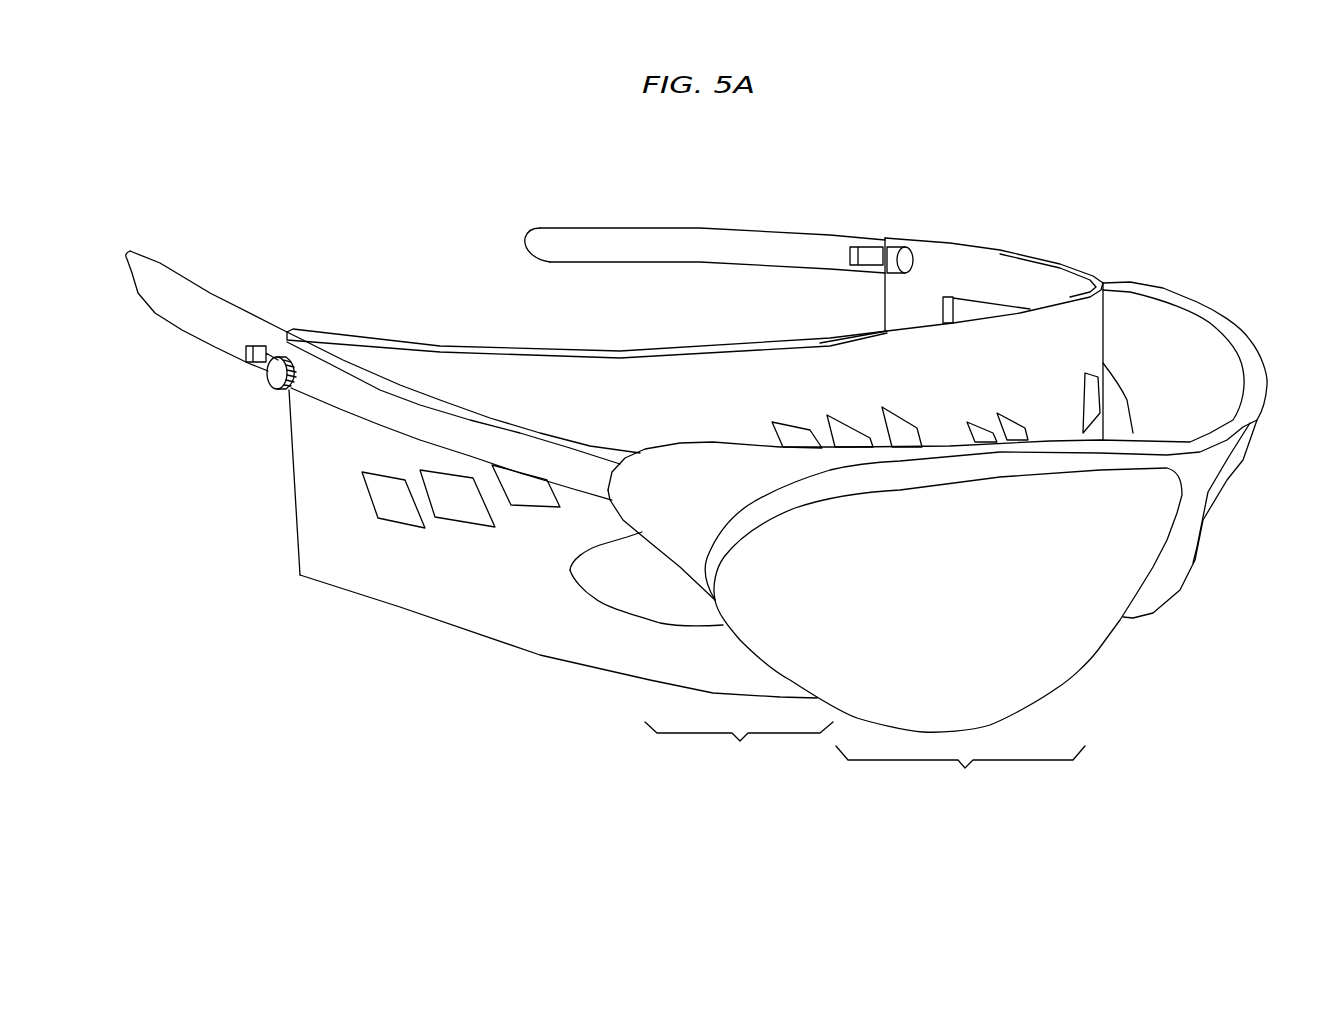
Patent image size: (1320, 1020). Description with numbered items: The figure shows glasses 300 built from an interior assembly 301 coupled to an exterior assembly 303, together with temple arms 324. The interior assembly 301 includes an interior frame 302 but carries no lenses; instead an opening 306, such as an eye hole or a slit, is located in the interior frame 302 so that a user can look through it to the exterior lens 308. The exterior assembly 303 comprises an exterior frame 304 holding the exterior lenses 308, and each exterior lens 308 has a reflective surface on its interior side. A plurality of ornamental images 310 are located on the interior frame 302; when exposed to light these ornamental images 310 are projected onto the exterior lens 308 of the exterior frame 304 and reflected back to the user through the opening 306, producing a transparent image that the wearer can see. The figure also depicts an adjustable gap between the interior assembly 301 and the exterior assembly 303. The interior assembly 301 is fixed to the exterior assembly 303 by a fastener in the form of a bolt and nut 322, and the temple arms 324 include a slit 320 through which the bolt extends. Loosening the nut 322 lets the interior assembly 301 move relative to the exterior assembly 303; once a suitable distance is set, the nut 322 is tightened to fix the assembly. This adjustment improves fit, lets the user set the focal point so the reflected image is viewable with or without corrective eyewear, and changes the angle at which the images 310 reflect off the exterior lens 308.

The glasses 300 is at (545, 191).
The interior assembly 301 is at (741, 740).
The interior frame 302 is at (577, 637).
The exterior assembly 303 is at (965, 770).
The exterior frame 304 is at (1170, 297).
The opening 306 is at (658, 592).
The exterior lens 308 is at (1052, 618).
The ornamental images 310 is at (397, 500).
The slit 320 is at (253, 355).
The bolt and nut 322 is at (273, 373).
The temple arms 324 is at (182, 283).